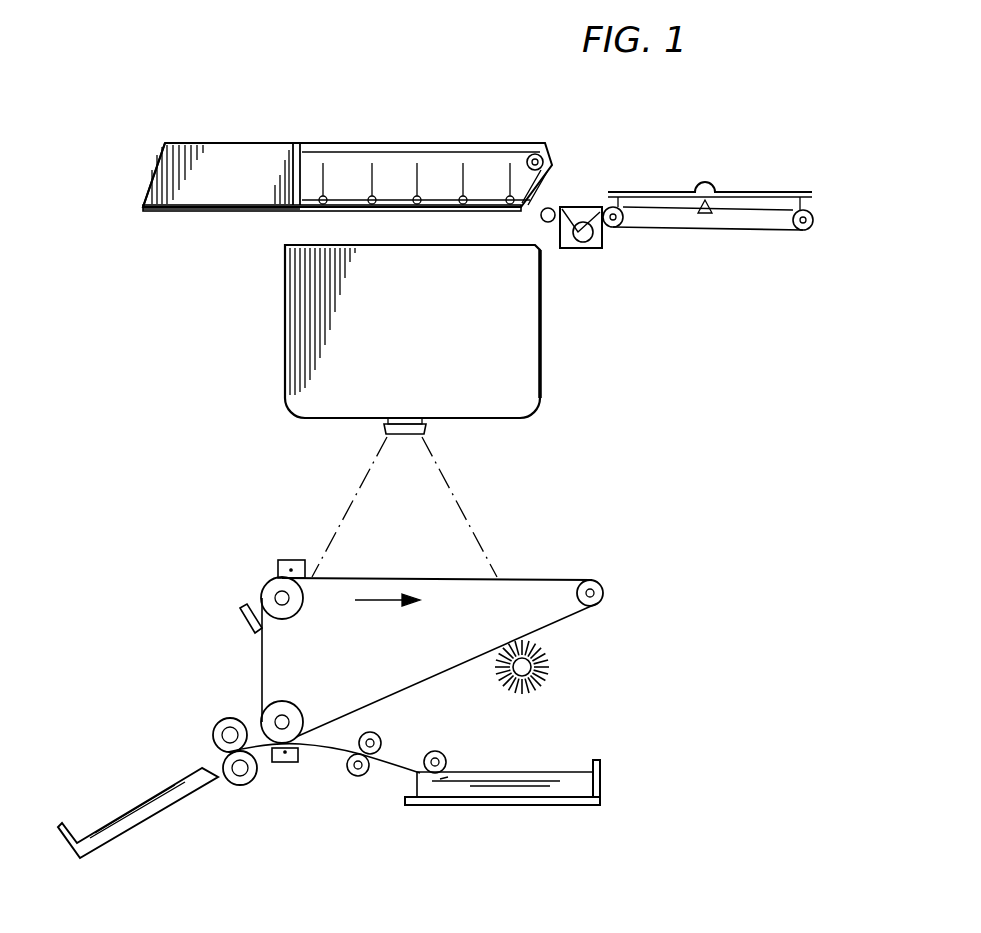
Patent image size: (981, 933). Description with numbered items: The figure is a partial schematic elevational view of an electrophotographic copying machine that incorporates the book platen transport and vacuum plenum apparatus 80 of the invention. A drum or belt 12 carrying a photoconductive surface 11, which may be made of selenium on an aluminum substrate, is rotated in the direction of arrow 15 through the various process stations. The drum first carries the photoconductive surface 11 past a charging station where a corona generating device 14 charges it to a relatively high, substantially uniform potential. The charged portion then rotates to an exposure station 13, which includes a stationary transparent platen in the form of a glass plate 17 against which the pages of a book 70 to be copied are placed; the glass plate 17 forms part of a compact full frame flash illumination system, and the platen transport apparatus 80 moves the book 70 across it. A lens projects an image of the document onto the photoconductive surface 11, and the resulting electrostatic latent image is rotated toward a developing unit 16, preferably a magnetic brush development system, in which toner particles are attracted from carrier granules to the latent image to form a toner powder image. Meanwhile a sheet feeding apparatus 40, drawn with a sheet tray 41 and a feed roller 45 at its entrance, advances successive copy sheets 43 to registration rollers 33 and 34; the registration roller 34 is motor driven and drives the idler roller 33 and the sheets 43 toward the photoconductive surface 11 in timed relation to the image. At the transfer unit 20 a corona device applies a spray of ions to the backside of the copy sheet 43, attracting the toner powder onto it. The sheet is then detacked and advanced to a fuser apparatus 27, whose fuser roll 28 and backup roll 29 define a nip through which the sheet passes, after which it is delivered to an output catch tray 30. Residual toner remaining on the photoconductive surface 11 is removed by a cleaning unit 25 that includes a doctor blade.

The book platen transport and vacuum plenum apparatus 80 is at (427, 130).
The glass plate 17 is at (283, 215).
The book 70 is at (738, 192).
The exposure station 13 is at (520, 330).
The photoconductive surface 11 is at (529, 578).
The drum or belt 12 is at (423, 578).
The corona generating device 14 is at (292, 560).
The arrow 15 is at (383, 601).
The developing unit 16 is at (548, 664).
The cleaning unit 25 is at (242, 612).
The fuser apparatus 27 is at (208, 753).
The fuser roll 28 is at (232, 718).
The backup roll 29 is at (240, 785).
The transfer unit 20 is at (286, 762).
The output catch tray 30 is at (138, 830).
The idler roller 33 is at (383, 741).
The registration roller 34 is at (358, 777).
The roller 45 is at (443, 753).
The sheet feeding apparatus 40 is at (510, 758).
The receiving tray 41 is at (537, 807).
The copy sheet 43 is at (580, 770).